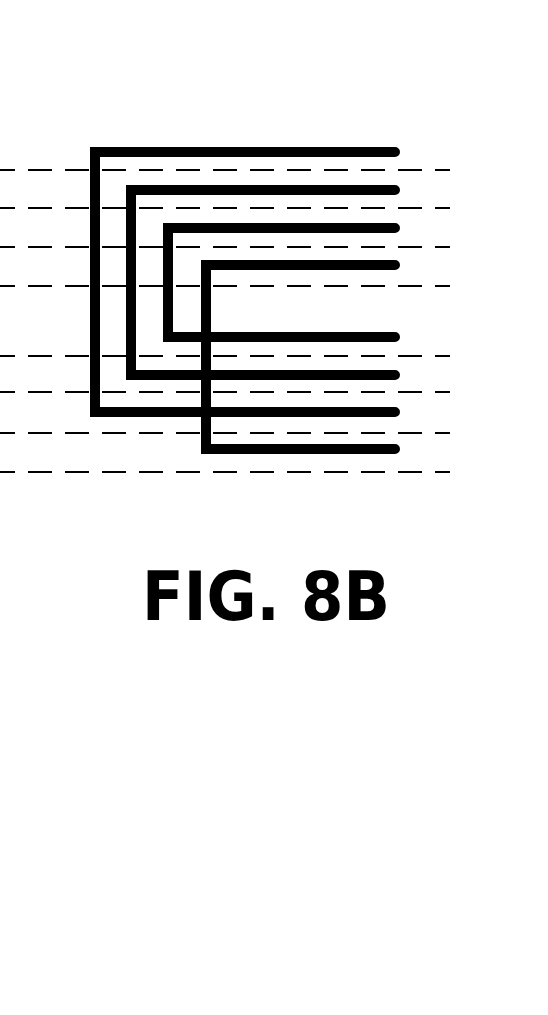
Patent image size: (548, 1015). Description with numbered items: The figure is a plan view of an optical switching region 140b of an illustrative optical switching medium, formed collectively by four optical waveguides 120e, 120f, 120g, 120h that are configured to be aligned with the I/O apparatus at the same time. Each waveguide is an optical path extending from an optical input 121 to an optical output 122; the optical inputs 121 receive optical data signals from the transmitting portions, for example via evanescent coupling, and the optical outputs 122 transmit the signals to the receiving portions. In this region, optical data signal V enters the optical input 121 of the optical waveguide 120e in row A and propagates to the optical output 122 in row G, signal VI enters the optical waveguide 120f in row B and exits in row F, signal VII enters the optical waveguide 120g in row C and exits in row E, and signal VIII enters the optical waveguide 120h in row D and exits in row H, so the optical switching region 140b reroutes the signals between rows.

The optical waveguide 120e is at (222, 147).
The optical waveguide 120f is at (212, 176).
The optical waveguide 120g is at (210, 213).
The optical waveguide 120h is at (207, 252).
The optical switching region 140b is at (230, 105).
The optical input 121 is at (291, 265).
The optical output 122 is at (262, 337).